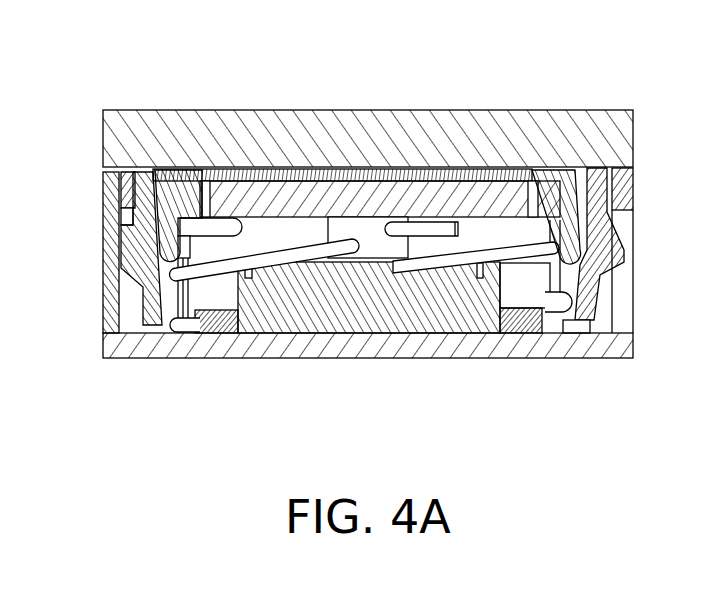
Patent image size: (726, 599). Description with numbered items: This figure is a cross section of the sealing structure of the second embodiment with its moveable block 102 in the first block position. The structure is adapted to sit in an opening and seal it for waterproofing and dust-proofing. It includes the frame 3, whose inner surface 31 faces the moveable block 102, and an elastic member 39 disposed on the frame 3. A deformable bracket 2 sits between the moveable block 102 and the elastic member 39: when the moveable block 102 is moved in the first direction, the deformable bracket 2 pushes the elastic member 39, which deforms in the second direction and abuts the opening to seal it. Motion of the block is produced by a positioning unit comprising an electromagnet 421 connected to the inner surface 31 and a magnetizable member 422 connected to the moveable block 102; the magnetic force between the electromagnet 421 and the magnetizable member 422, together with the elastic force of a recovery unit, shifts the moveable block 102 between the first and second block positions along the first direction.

The deformable bracket 2 is at (133, 238).
The frame 3 is at (153, 359).
The inner surface 31 is at (220, 338).
The elastic member 39 is at (110, 308).
The moveable block 102 is at (556, 190).
The electromagnet 421 is at (372, 300).
The magnetizable member 422 is at (378, 200).